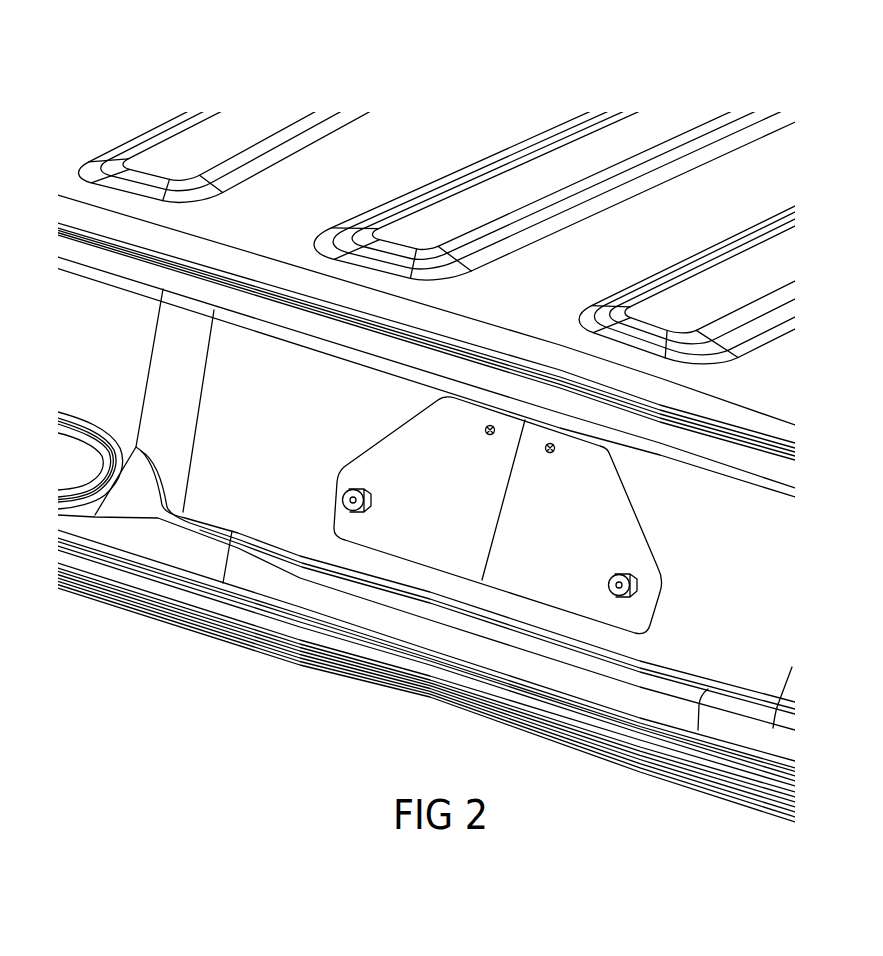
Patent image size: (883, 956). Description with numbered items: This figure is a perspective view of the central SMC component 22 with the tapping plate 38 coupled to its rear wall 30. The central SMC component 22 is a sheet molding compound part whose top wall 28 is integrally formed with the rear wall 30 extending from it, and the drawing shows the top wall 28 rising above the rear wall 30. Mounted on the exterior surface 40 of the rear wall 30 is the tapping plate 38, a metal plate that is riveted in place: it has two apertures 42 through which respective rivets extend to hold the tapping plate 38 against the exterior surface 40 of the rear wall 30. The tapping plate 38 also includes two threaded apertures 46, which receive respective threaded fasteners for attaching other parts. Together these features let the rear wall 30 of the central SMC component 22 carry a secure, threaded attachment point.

The central SMC component 22 is at (439, 138).
The top wall 28 is at (757, 377).
The rear wall 30 is at (732, 553).
The tapping plate 38 is at (403, 442).
The exterior surface 40 is at (370, 184).
The apertures 42 is at (546, 449).
The threaded apertures 46 is at (343, 499).